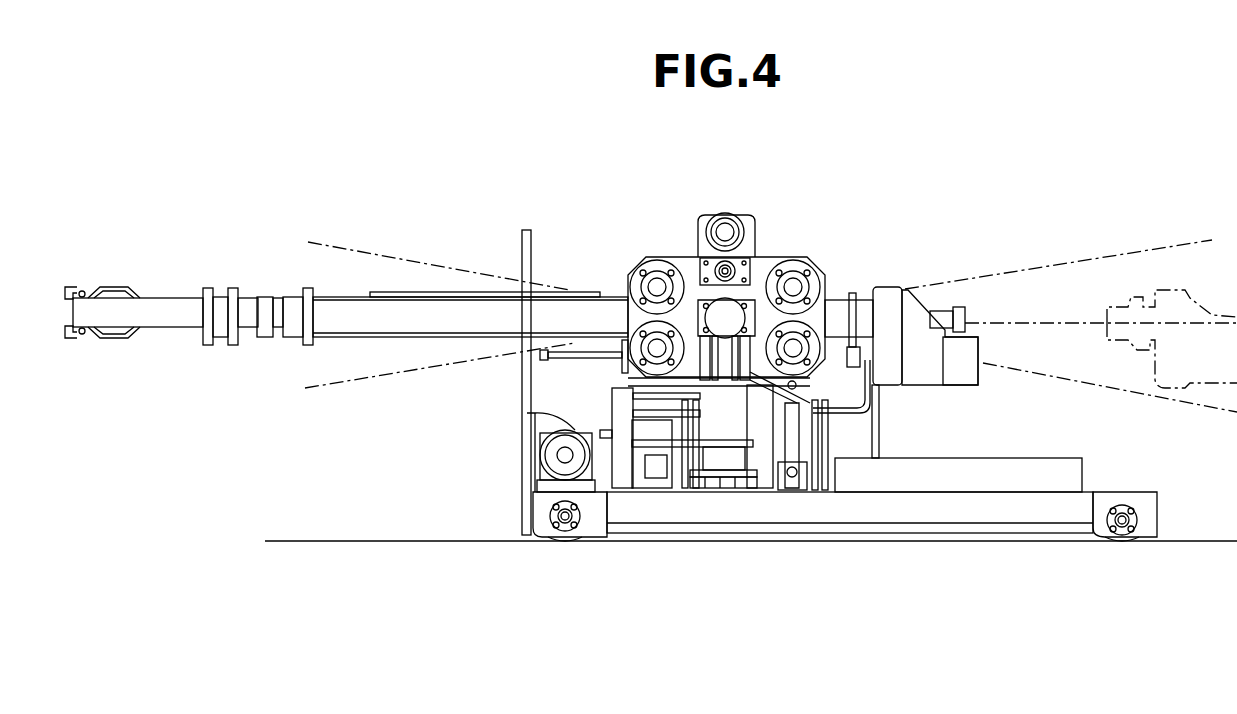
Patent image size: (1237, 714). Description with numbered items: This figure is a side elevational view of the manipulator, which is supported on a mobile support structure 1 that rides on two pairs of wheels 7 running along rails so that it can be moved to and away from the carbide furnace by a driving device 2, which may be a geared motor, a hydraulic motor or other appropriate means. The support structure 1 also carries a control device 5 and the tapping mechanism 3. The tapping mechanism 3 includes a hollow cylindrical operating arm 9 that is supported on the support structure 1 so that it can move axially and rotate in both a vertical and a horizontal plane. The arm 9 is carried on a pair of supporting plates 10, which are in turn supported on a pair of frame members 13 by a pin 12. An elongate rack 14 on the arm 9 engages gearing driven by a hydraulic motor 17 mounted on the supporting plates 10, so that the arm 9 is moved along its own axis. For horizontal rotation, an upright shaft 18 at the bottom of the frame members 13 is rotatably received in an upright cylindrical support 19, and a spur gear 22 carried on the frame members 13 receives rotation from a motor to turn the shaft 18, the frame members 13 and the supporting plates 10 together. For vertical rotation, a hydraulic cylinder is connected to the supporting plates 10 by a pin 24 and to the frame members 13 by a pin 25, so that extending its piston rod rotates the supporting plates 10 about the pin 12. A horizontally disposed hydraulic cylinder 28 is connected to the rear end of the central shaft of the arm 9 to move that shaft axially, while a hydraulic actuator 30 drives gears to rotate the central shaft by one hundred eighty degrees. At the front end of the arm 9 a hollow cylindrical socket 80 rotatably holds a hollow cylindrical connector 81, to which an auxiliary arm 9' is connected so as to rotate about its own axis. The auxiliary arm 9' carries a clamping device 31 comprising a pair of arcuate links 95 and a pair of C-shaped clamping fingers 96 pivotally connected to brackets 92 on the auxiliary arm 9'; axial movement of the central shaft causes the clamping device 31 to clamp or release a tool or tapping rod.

The mobile support structure 1 is at (980, 510).
The driving device 2 is at (563, 430).
The tapping mechanism 3 is at (420, 290).
The control device 5 is at (1013, 460).
The wheels 7 is at (563, 540).
The operating arm 9 is at (470, 271).
The auxiliary arm 9' is at (138, 276).
The supporting plates 10 is at (680, 262).
The pin 12 is at (727, 315).
The frame members 13 is at (740, 402).
The rack 14 is at (583, 292).
The hydraulic motor 17 is at (725, 214).
The upright shaft 18 is at (718, 432).
The upright cylindrical support 19 is at (710, 463).
The spur gear 22 is at (683, 427).
The pin 24 is at (840, 413).
The pin 25 is at (797, 448).
The hydraulic cylinder 28 is at (945, 310).
The hydraulic actuator 30 is at (963, 386).
The clamping device 31 is at (111, 285).
The hollow cylindrical socket 80 is at (263, 297).
The hollow cylindrical connector 81 is at (292, 297).
The brackets 92 is at (83, 291).
The links 95 is at (125, 290).
The clamping fingers 96 is at (70, 287).